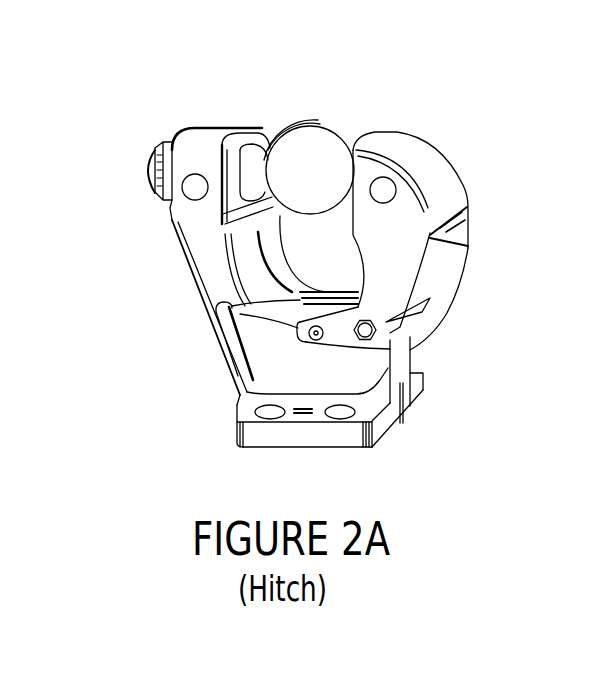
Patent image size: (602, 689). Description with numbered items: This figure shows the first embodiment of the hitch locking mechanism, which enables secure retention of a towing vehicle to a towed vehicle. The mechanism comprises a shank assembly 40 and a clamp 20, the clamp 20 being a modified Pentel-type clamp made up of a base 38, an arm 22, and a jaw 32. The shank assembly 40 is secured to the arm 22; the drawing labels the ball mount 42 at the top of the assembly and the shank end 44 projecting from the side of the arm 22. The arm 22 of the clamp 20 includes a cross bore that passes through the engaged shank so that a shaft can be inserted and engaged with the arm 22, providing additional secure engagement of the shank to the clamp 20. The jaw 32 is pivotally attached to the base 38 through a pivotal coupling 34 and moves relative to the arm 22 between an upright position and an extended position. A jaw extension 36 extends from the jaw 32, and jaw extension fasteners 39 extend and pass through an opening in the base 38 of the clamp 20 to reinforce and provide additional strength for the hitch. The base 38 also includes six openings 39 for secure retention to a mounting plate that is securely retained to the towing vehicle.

The clamp 20 is at (315, 238).
The arm 22 is at (207, 227).
The jaw 32 is at (466, 248).
The pivotal coupling 34 is at (390, 349).
The jaw extension 36 is at (335, 350).
The base 38 is at (245, 410).
The jaw extension fastener 39 is at (308, 338).
The shank assembly 40 is at (291, 103).
The ball mount 42 is at (337, 140).
The shank end 44 is at (150, 138).